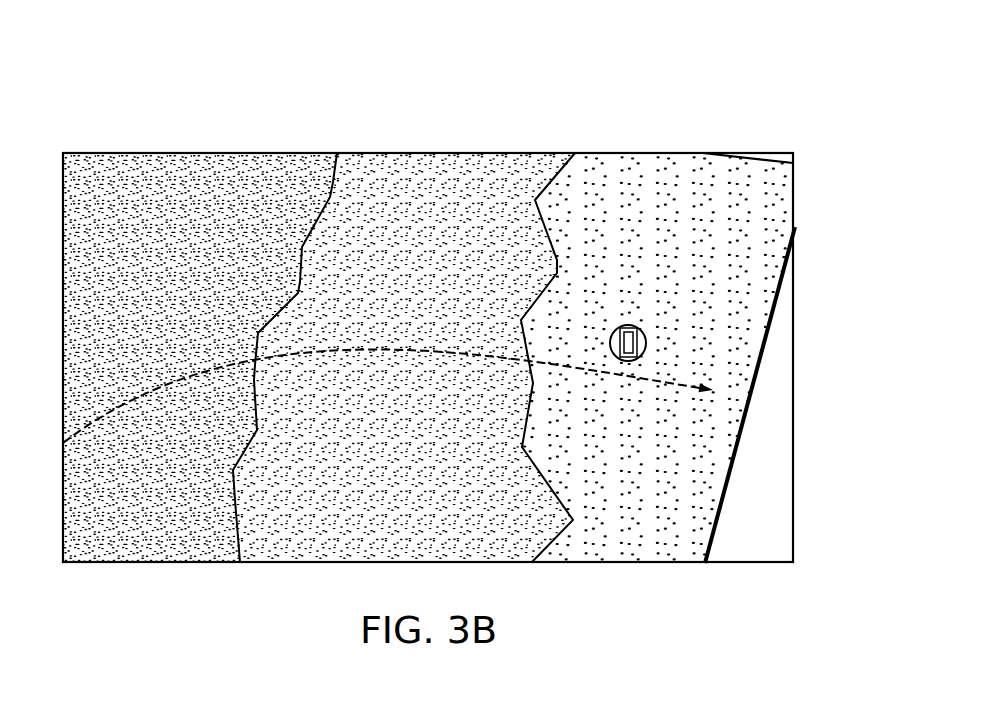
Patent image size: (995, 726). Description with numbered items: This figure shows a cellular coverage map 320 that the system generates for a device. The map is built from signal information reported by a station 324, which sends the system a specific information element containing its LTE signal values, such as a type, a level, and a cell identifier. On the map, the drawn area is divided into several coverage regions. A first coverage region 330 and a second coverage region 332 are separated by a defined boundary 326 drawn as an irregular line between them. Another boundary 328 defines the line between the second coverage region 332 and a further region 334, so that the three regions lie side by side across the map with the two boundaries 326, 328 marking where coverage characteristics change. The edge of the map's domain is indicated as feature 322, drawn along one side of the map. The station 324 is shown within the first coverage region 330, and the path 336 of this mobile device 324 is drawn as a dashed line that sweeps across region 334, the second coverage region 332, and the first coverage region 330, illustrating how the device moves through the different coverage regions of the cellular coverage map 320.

The cellular coverage map 320 is at (760, 125).
The edge of the domain 322 is at (742, 428).
The station 324 is at (646, 343).
The boundary 326 is at (557, 263).
The boundary 328 is at (300, 282).
The first coverage region 330 is at (685, 241).
The second coverage region 332 is at (452, 242).
The region 334 is at (218, 242).
The path 336 is at (360, 350).